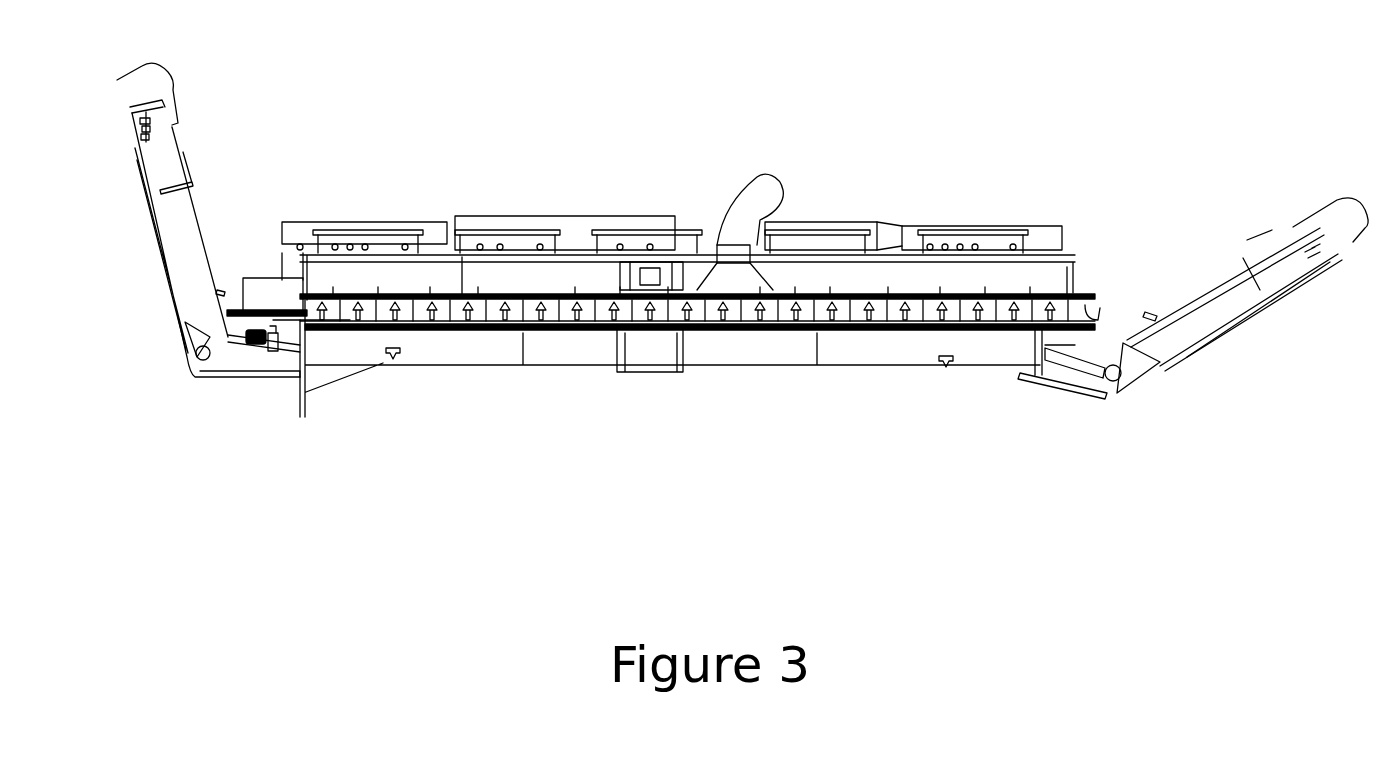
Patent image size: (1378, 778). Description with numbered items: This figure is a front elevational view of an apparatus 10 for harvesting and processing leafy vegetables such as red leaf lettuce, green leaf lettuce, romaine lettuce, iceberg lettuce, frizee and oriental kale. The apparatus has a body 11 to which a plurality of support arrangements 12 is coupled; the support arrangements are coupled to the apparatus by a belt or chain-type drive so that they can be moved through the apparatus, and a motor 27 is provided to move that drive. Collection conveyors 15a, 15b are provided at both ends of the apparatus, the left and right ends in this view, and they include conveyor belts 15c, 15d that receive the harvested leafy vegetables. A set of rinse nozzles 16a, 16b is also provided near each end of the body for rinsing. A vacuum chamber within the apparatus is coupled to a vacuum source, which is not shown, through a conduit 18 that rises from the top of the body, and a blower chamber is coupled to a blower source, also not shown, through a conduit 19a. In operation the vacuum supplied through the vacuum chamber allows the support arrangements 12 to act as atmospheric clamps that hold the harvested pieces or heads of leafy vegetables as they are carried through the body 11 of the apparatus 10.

The apparatus 10 is at (1117, 133).
The body 11 is at (838, 360).
The support arrangements 12 is at (478, 312).
The collection conveyor 15a is at (166, 220).
The collection conveyor 15b is at (1236, 295).
The conveyor belt 15c is at (160, 243).
The conveyor belt 15d is at (1252, 315).
The rinse nozzle 16a is at (218, 283).
The rinse nozzle 16b is at (1152, 312).
The conduit 18 is at (742, 200).
The conduit 19a is at (575, 230).
The motor 27 is at (258, 343).